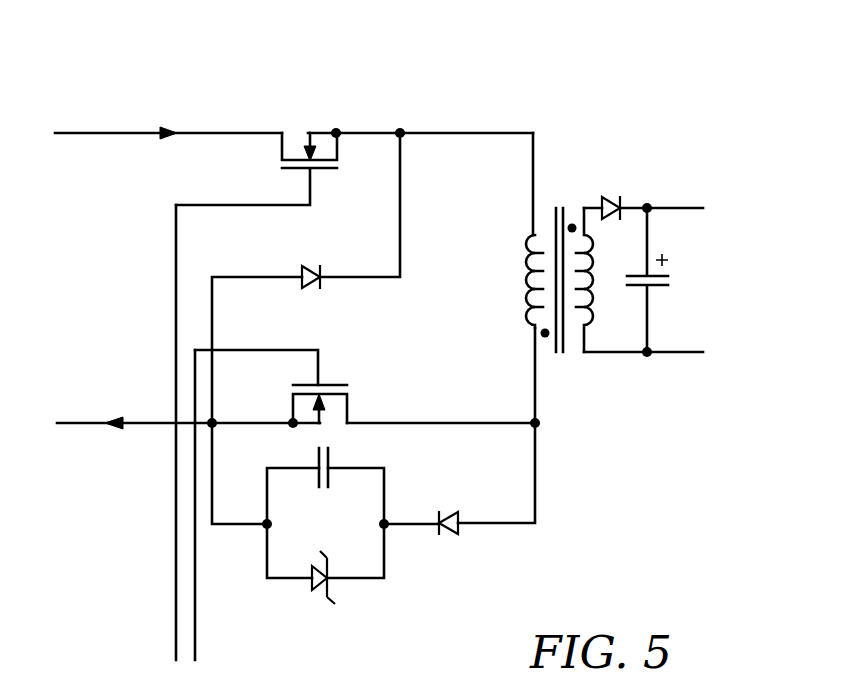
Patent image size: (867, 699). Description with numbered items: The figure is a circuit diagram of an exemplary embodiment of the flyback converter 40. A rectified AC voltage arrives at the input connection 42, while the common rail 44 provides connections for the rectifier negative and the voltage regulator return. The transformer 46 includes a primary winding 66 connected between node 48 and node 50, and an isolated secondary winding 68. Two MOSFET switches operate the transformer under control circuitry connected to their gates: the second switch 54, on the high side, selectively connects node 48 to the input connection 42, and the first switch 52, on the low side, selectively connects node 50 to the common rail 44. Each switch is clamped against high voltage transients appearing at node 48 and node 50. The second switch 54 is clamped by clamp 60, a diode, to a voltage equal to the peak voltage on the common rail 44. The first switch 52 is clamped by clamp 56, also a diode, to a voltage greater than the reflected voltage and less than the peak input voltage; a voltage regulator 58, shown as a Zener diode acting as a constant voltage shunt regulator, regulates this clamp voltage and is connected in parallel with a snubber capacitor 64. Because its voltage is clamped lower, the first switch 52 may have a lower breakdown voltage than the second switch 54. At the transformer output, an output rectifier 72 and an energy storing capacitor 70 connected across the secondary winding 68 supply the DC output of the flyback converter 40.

The flyback converter 40 is at (613, 68).
The input connection 42 is at (110, 132).
The common rail 44 is at (76, 422).
The transformer 46 is at (564, 200).
The node 48 is at (533, 130).
The node 50 is at (545, 423).
The first switch 52 is at (334, 385).
The second switch 54 is at (316, 130).
The clamp 56 is at (447, 536).
The voltage regulator 58 is at (306, 593).
The clamp 60 is at (307, 268).
The snubber capacitor 64 is at (333, 463).
The primary winding 66 is at (524, 283).
The secondary winding 68 is at (588, 292).
The energy storing capacitor 70 is at (672, 278).
The output rectifier 72 is at (612, 197).